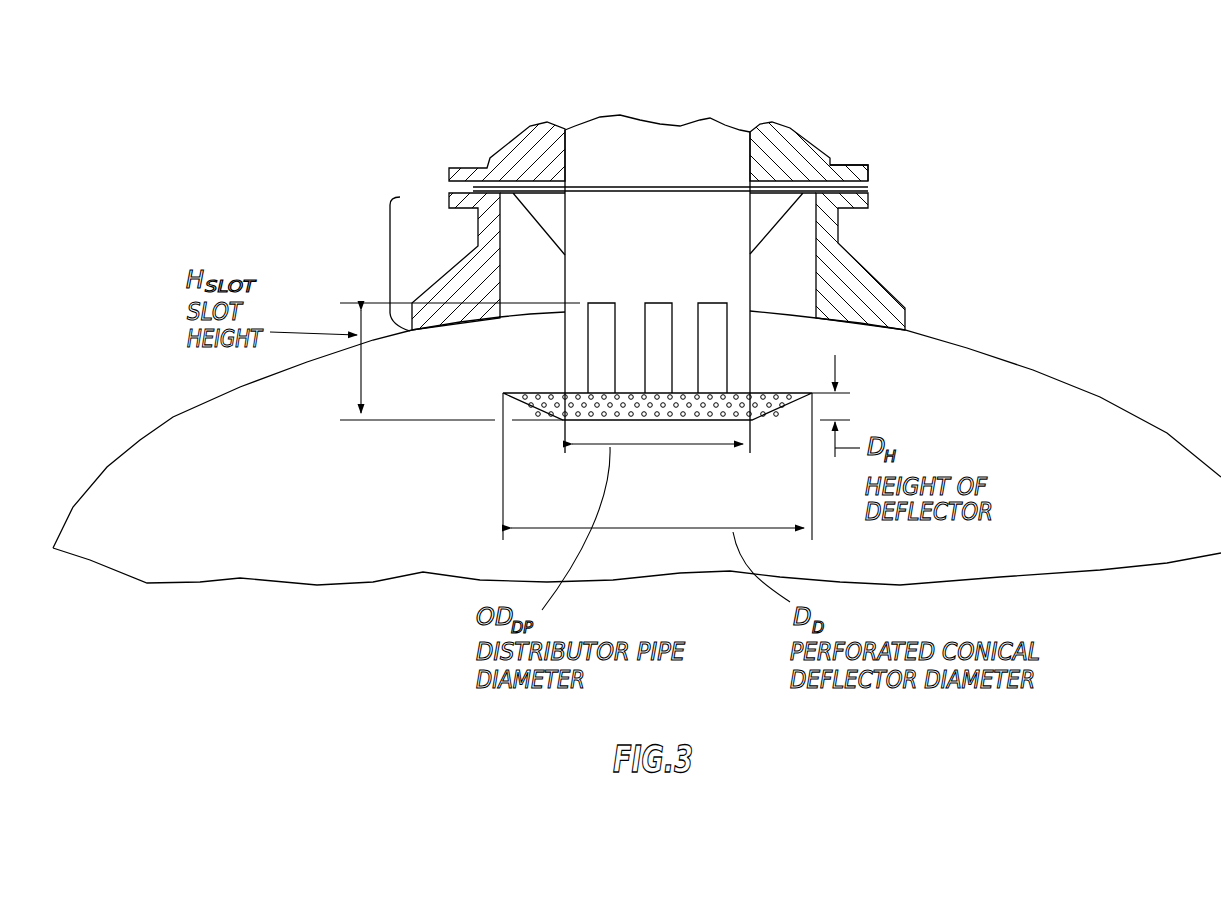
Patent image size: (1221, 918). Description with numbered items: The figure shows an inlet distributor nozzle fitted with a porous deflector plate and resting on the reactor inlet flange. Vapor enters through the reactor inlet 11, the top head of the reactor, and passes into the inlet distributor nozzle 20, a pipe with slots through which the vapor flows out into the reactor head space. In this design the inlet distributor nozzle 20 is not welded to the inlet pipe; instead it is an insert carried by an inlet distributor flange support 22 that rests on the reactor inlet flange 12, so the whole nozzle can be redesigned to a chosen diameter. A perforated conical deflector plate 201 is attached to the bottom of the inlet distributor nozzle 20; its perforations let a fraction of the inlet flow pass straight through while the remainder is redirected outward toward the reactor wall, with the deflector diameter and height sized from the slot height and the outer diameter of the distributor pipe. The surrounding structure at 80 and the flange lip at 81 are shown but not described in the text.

The reactor inlet 11 is at (388, 262).
The reactor inlet flange 12 is at (445, 193).
The inlet distributor nozzle 20 is at (561, 335).
The perforated conical deflector plate 201 is at (556, 424).
The inlet distributor flange support 22 is at (852, 188).
The nozzle 80 is at (743, 142).
The flange lip 81 is at (869, 163).